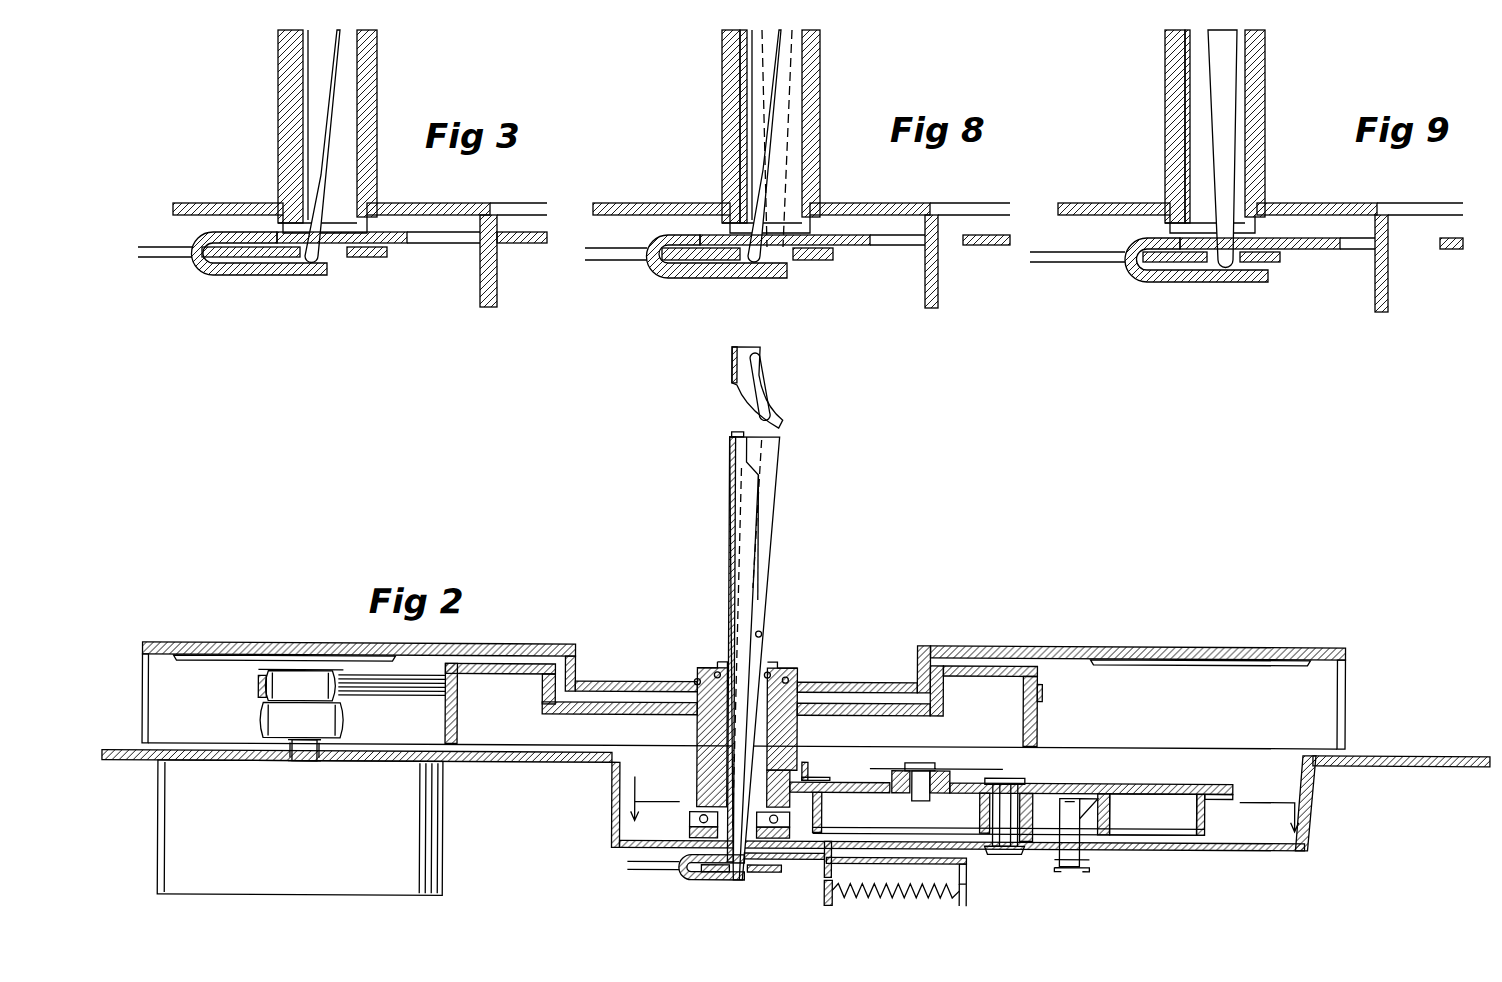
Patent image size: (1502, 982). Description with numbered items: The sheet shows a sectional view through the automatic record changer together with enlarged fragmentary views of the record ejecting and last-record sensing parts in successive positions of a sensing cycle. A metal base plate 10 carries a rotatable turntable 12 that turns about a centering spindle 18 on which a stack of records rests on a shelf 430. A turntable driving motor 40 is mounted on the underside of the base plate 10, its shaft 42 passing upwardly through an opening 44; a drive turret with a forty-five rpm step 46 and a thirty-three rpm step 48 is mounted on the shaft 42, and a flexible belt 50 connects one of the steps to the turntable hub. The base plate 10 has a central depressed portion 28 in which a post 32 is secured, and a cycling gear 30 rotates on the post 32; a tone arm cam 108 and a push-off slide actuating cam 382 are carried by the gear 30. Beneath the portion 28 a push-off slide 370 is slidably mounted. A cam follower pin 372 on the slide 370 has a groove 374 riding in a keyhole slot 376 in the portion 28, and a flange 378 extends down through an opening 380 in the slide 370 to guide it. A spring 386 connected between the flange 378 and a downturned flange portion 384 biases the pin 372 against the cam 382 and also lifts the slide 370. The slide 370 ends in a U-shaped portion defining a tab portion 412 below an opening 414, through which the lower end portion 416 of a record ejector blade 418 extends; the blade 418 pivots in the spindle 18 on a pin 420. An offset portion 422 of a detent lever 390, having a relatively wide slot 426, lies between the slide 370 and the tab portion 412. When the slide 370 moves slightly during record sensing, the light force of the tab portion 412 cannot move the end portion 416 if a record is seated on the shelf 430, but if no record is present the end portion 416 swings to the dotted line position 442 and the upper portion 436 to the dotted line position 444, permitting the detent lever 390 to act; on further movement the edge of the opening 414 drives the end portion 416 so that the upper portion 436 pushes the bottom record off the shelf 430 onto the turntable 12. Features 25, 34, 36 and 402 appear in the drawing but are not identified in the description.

In FIG. 2, the base plate 10 is at (1363, 752).
In FIG. 2, the turntable 12 is at (1345, 700).
In FIG. 2, the centering spindle 18 is at (762, 352).
In FIG. 2, the section line 25 is at (965, 803).
In FIG. 3, the central depressed portion 28 is at (457, 203).
In FIG. 8, the central depressed portion 28 is at (895, 203).
In FIG. 9, the central depressed portion 28 is at (1346, 203).
In FIG. 2, the central depressed portion 28 is at (1240, 840).
In FIG. 2, the cycling gear 30 is at (1200, 781).
In FIG. 2, the post 32 is at (1002, 778).
In FIG. 2, the block 34 is at (1030, 792).
In FIG. 3, the tubular guide 36 is at (378, 96).
In FIG. 8, the tubular guide 36 is at (822, 96).
In FIG. 9, the tubular guide 36 is at (1268, 98).
In FIG. 2, the turntable driving motor 40 is at (372, 893).
In FIG. 2, the shaft 42 is at (305, 765).
In FIG. 2, the opening 44 is at (292, 763).
In FIG. 2, the 45 rpm step 46 is at (275, 719).
In FIG. 2, the 33 rpm step 48 is at (270, 685).
In FIG. 2, the flexible belt 50 is at (262, 696).
In FIG. 2, the tone arm cam 108 is at (1115, 815).
In FIG. 3, the push-off slide 370 is at (528, 246).
In FIG. 8, the push-off slide 370 is at (975, 248).
In FIG. 9, the push-off slide 370 is at (1455, 251).
In FIG. 2, the push-off slide 370 is at (905, 866).
In FIG. 2, the cam follower pin 372 is at (1104, 792).
In FIG. 2, the groove 374 is at (1085, 866).
In FIG. 2, the keyhole slot 376 is at (1125, 850).
In FIG. 3, the flange 378 is at (480, 300).
In FIG. 8, the flange 378 is at (927, 303).
In FIG. 9, the flange 378 is at (1376, 306).
In FIG. 2, the flange 378 is at (829, 845).
In FIG. 3, the opening 380 is at (413, 245).
In FIG. 8, the opening 380 is at (870, 247).
In FIG. 9, the opening 380 is at (1340, 250).
In FIG. 2, the opening 380 is at (790, 862).
In FIG. 2, the push-off slide actuating cam 382 is at (1070, 797).
In FIG. 2, the downturned flange portion 384 is at (968, 896).
In FIG. 2, the spring 386 is at (930, 900).
In FIG. 3, the detent lever 390 is at (186, 267).
In FIG. 8, the detent lever 390 is at (637, 268).
In FIG. 9, the detent lever 390 is at (1072, 270).
In FIG. 2, the detent lever 390 is at (656, 878).
In FIG. 2, the wall 402 is at (1206, 824).
In FIG. 3, the tab portion 412 is at (216, 277).
In FIG. 8, the tab portion 412 is at (683, 279).
In FIG. 9, the tab portion 412 is at (1150, 283).
In FIG. 2, the tab portion 412 is at (745, 881).
In FIG. 3, the opening 414 is at (277, 232).
In FIG. 8, the opening 414 is at (756, 279).
In FIG. 9, the opening 414 is at (1272, 208).
In FIG. 3, the lower end portion 416 is at (312, 168).
In FIG. 8, the lower end portion 416 is at (755, 165).
In FIG. 9, the lower end portion 416 is at (1230, 148).
In FIG. 2, the lower end portion 416 is at (740, 883).
In FIG. 2, the record ejector blade 418 is at (785, 482).
In FIG. 2, the pin 420 is at (762, 634).
In FIG. 3, the offset portion 422 is at (290, 258).
In FIG. 2, the offset portion 422 is at (713, 875).
In FIG. 3, the wide slot 426 is at (343, 258).
In FIG. 8, the wide slot 426 is at (795, 262).
In FIG. 9, the wide slot 426 is at (1187, 263).
In FIG. 2, the wide slot 426 is at (750, 876).
In FIG. 2, the shelf 430 is at (737, 432).
In FIG. 2, the upper portion 436 is at (775, 455).
In FIG. 8, the dotted line position 442 is at (775, 188).
In FIG. 2, the dotted line position 444 is at (735, 470).